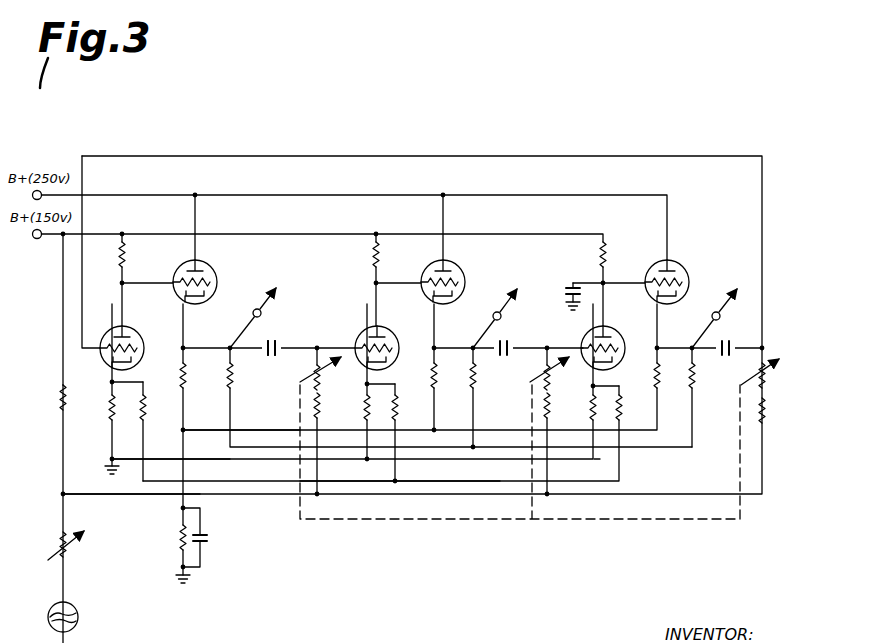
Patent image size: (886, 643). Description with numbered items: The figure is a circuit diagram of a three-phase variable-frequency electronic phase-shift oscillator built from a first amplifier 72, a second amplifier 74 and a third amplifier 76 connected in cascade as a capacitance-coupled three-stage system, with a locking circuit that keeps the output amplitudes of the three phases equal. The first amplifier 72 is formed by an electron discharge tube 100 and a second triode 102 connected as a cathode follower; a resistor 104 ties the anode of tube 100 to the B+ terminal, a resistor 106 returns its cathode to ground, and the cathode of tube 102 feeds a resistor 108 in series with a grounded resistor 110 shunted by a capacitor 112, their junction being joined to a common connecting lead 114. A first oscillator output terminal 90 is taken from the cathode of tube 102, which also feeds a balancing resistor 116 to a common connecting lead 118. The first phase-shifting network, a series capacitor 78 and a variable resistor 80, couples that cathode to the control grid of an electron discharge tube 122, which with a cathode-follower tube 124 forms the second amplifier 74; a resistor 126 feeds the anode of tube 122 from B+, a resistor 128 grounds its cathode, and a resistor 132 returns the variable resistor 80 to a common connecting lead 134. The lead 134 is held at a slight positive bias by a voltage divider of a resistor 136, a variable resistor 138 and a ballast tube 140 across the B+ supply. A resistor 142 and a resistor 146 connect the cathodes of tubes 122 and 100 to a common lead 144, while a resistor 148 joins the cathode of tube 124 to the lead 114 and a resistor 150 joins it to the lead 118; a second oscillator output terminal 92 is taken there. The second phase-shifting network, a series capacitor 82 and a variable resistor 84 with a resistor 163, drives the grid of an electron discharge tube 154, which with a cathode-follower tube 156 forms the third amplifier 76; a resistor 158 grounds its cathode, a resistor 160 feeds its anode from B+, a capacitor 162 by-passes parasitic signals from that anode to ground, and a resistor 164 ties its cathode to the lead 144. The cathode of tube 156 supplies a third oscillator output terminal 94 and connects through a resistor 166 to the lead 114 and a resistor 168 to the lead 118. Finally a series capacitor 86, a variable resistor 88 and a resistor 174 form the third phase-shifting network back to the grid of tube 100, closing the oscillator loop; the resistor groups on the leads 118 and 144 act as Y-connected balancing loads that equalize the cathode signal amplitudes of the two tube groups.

The first amplifier 72 is at (160, 333).
The second amplifier 74 is at (409, 326).
The third amplifier 76 is at (633, 320).
The series capacitor 78 is at (276, 341).
The variable resistor 80 is at (294, 375).
The series capacitor 82 is at (514, 342).
The variable resistor 84 is at (539, 369).
The series capacitor 86 is at (735, 341).
The variable resistor 88 is at (766, 378).
The first oscillator output terminal 90 is at (252, 317).
The second oscillator output terminal 92 is at (492, 315).
The third oscillator output terminal 94 is at (712, 314).
The electron discharge tube 100 is at (103, 330).
The second triode 102 is at (209, 268).
The resistor 104 is at (126, 252).
The resistor 106 is at (104, 411).
The resistor 108 is at (177, 381).
The grounded resistor 110 is at (178, 542).
The capacitor 112 is at (208, 545).
The common connecting lead 114 is at (216, 432).
The balancing resistor 116 is at (226, 380).
The common connecting lead 118 is at (258, 461).
The electron discharge tube 122 is at (350, 334).
The electron discharge tube 124 is at (462, 269).
The resistor 126 is at (380, 250).
The resistor 128 is at (364, 411).
The resistor 132 is at (320, 397).
The common connecting lead 134 is at (134, 499).
The resistor 136 is at (66, 403).
The variable resistor 138 is at (66, 557).
The ballast tube 140 is at (48, 606).
The resistor 142 is at (398, 395).
The common lead 144 is at (360, 482).
The resistor 146 is at (146, 405).
The resistor 148 is at (438, 376).
The resistor 150 is at (477, 384).
The electron discharge tube 154 is at (581, 336).
The electron discharge tube 156 is at (678, 262).
The resistor 158 is at (550, 397).
The resistor 160 is at (607, 253).
The capacitor 162 is at (565, 285).
The resistor 163 is at (580, 411).
The resistor 164 is at (658, 390).
The resistor 166 is at (660, 385).
The resistor 168 is at (696, 385).
The resistor 174 is at (766, 415).